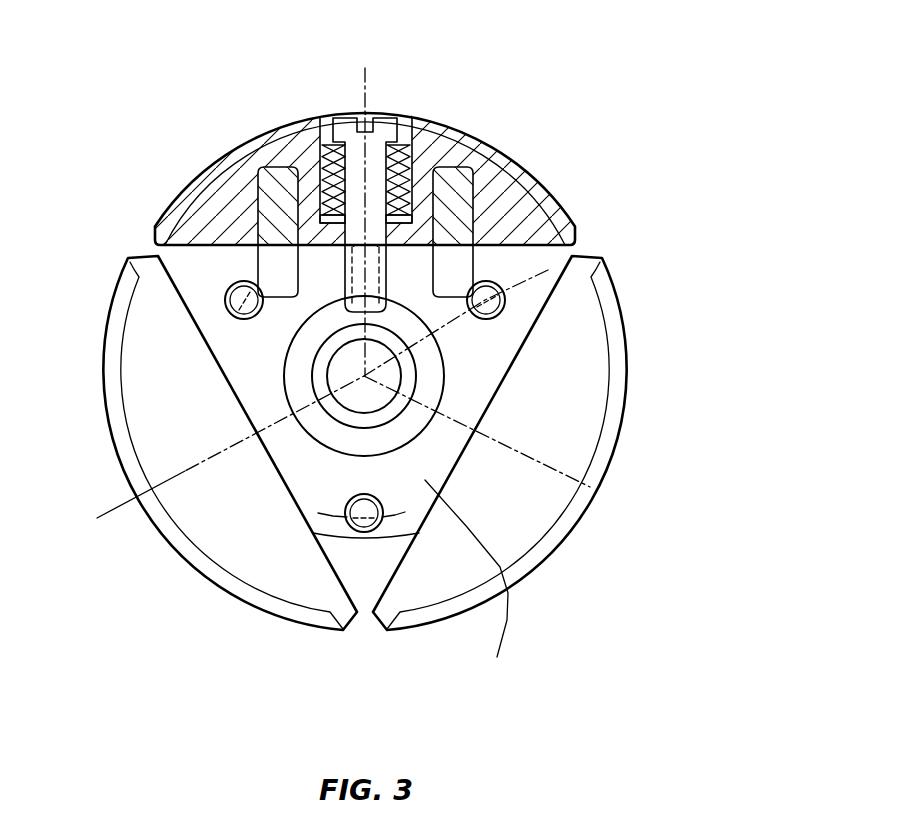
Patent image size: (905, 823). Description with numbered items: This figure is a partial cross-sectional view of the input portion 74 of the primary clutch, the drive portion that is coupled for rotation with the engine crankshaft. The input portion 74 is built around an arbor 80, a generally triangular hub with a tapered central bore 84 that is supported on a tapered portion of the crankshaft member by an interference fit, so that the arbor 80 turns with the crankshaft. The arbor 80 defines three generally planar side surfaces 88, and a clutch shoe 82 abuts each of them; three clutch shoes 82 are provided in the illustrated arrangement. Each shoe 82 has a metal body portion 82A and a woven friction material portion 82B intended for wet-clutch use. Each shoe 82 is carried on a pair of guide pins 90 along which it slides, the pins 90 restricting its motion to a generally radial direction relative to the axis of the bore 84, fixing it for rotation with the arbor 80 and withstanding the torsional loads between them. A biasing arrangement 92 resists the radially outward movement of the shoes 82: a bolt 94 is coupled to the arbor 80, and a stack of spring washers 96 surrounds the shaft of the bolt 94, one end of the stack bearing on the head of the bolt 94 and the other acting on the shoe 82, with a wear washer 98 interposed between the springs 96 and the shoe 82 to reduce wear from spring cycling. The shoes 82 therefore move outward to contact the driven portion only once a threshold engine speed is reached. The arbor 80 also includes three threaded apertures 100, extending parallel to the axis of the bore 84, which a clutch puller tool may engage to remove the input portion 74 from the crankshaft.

The input portion 74 is at (416, 355).
The arbor 80 is at (466, 584).
The clutch shoe 82 is at (140, 397).
The body portion 82A is at (528, 230).
The friction material portion 82B is at (525, 212).
The central bore 84 is at (392, 370).
The side surface 88 is at (260, 218).
The guide pin 90 is at (470, 168).
The biasing arrangement 92 is at (397, 195).
The bolt 94 is at (344, 124).
The springs 96 is at (334, 143).
The washer 98 is at (313, 208).
The threaded aperture 100 is at (233, 318).